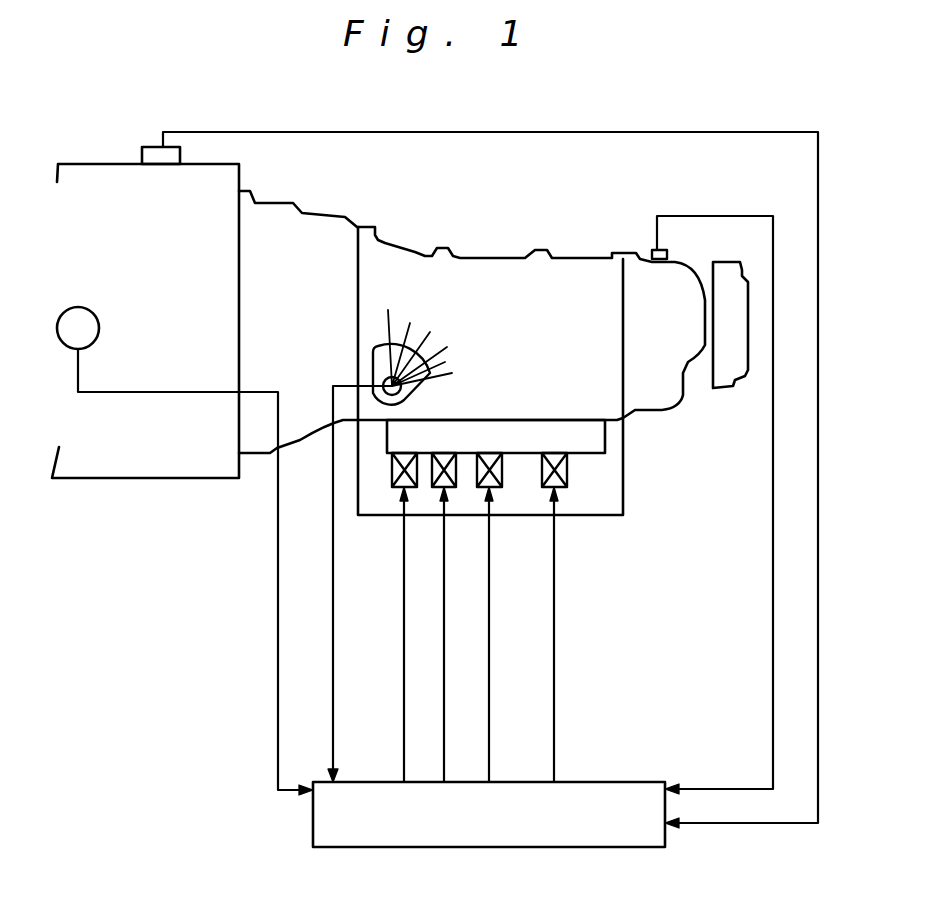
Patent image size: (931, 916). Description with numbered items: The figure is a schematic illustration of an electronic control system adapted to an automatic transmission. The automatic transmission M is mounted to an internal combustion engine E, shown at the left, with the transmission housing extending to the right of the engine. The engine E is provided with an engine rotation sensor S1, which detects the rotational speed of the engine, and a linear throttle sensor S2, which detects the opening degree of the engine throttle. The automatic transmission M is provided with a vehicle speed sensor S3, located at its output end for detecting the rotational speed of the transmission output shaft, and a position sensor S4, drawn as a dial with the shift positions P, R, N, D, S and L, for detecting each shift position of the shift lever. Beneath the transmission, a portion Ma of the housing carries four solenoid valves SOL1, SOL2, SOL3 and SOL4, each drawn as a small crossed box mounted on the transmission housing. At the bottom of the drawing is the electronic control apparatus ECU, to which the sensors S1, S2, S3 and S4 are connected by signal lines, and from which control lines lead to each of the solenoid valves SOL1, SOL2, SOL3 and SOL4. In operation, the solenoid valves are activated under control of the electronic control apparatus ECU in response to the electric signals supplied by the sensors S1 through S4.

The internal combustion engine E is at (128, 465).
The automatic transmission M is at (487, 278).
The hydraulic control valve body Ma is at (613, 472).
The engine rotation sensor S1 is at (153, 152).
The linear throttle sensor S2 is at (83, 320).
The vehicle speed sensor S3 is at (660, 257).
The position sensor S4 is at (401, 535).
The solenoid valve SOL1 is at (393, 470).
The solenoid valve SOL2 is at (432, 475).
The solenoid valve SOL3 is at (502, 470).
The solenoid valve SOL4 is at (567, 470).
The electronic control apparatus ECU is at (489, 814).